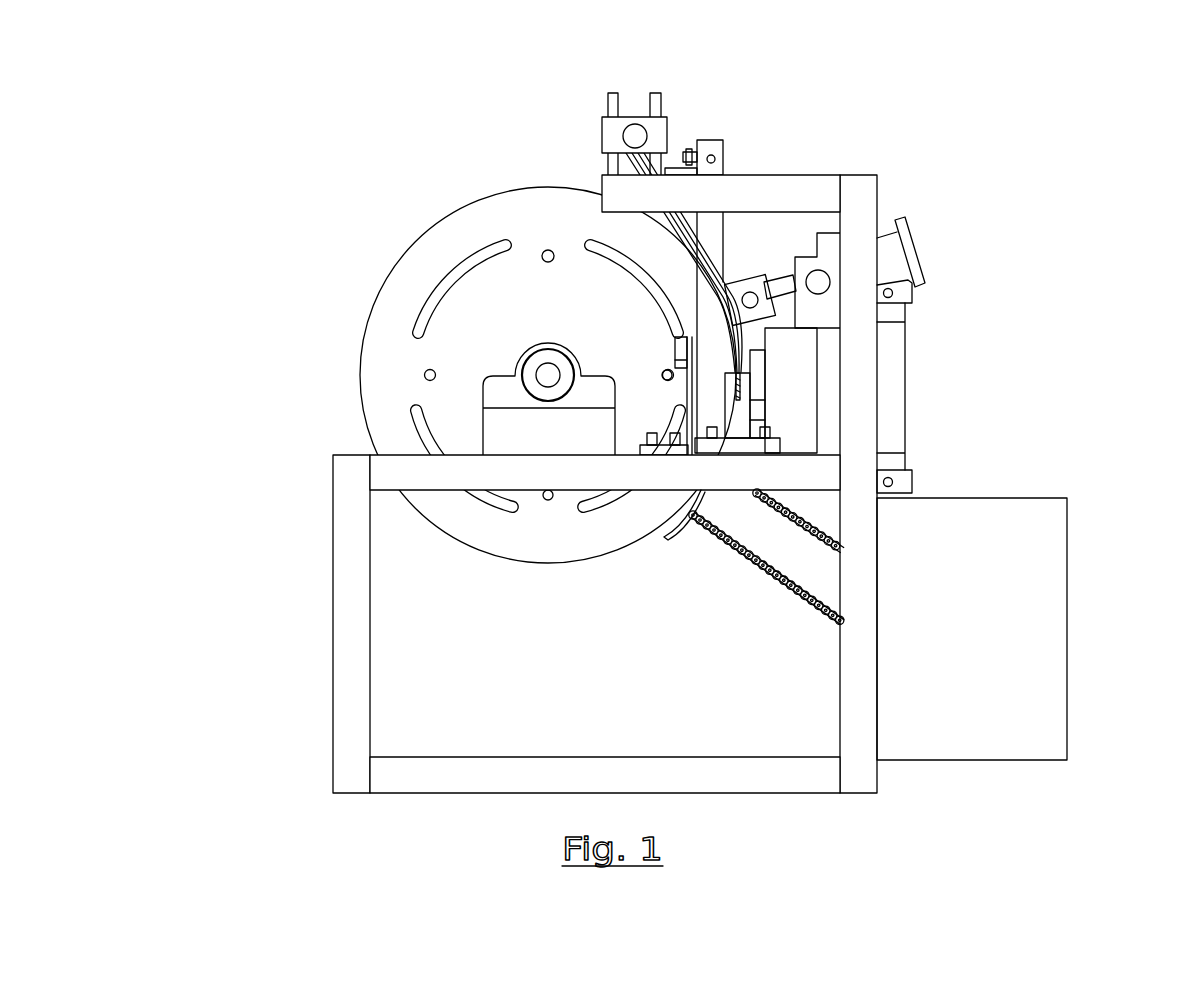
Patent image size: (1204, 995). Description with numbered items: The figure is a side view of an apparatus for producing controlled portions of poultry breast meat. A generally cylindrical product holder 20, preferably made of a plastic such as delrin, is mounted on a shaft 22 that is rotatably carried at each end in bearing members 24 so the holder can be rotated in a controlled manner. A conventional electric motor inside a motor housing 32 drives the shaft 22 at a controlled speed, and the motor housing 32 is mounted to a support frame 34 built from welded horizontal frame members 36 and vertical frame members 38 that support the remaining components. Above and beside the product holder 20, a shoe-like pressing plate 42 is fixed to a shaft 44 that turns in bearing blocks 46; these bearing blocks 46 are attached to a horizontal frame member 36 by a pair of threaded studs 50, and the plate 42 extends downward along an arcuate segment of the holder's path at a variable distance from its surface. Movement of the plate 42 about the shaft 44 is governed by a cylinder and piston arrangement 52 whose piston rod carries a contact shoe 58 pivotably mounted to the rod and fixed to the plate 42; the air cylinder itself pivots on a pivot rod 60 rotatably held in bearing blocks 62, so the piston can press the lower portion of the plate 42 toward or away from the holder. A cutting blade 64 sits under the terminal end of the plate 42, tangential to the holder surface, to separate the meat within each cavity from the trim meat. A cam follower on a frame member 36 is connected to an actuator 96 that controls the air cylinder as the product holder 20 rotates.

The product holder 20 is at (392, 203).
The shaft 22 is at (540, 364).
The bearing members 24 is at (564, 358).
The motor housing 32 is at (1066, 634).
The support frame 34 is at (572, 483).
The horizontal frame member 36 is at (387, 490).
The vertical frame member 38 is at (333, 640).
The shoe-like plate 42 is at (703, 250).
The shaft 44 is at (622, 138).
The bearing blocks 46 is at (667, 140).
The threaded studs 50 is at (660, 93).
The cylinder and piston arrangement 52 is at (919, 207).
The contact shoe 58 is at (742, 280).
The pivot rod 60 is at (815, 295).
The bearing blocks 62 is at (829, 232).
The cutting blade 64 is at (741, 384).
The actuator 96 is at (675, 360).